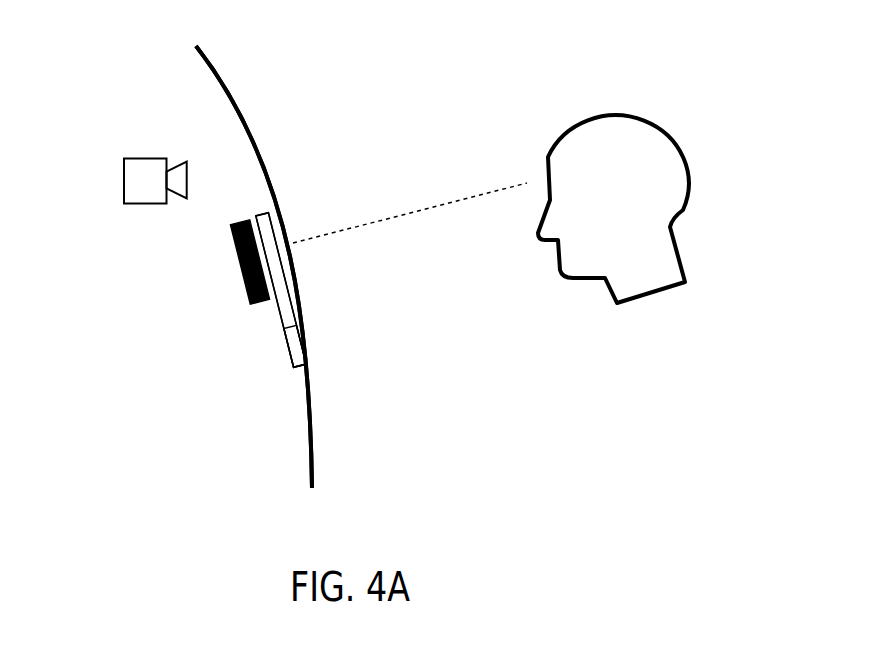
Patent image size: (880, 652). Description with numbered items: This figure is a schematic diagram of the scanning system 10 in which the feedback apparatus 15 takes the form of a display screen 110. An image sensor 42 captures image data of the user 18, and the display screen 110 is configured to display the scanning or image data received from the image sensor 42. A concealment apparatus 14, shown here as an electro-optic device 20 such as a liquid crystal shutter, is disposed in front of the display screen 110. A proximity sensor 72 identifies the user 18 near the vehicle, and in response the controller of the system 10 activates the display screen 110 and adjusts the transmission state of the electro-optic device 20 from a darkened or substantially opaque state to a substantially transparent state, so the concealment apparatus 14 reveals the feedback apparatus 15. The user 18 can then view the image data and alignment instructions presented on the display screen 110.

The system 10 is at (310, 65).
The feedback apparatus 15 is at (305, 195).
The image sensor 42 is at (130, 182).
The display screen 110 is at (233, 252).
The concealment apparatus 14 is at (285, 292).
The electro-optic device 20 is at (285, 292).
The proximity sensor 72 is at (220, 392).
The user 18 is at (650, 243).